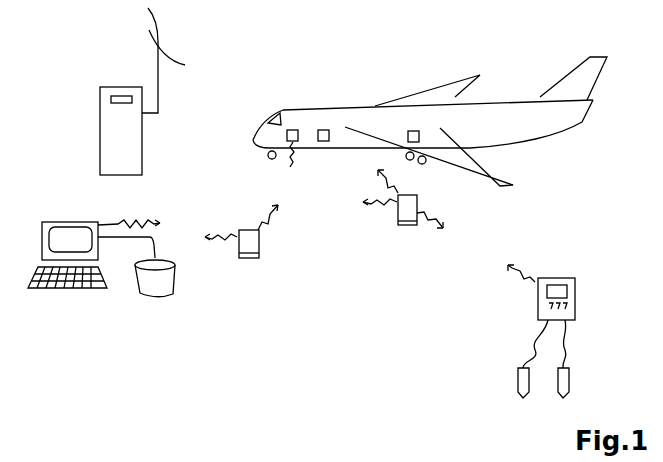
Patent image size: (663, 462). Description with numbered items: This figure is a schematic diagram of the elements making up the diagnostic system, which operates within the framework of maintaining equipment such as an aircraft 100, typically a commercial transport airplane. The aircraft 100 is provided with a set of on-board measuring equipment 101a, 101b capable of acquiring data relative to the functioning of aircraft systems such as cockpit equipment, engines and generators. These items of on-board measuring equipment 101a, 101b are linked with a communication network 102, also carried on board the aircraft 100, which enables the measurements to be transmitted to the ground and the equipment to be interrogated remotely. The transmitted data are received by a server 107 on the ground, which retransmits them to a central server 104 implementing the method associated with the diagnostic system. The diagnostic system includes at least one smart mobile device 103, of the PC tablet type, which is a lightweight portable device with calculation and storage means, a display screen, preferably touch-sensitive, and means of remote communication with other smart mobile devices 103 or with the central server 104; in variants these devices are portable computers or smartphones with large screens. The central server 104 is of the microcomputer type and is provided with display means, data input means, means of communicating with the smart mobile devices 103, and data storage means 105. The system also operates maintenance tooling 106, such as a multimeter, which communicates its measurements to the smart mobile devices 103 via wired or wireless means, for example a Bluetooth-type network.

The aircraft 100 is at (547, 128).
The on-board measuring equipment 101a is at (324, 130).
The on-board measuring equipment 101b is at (413, 130).
The communication network 102 is at (292, 129).
The smart mobile device 103 is at (398, 225).
The central server 104 is at (90, 297).
The data storage means 105 is at (173, 295).
The maintenance tooling 106 is at (575, 283).
The ground server 107 is at (100, 118).